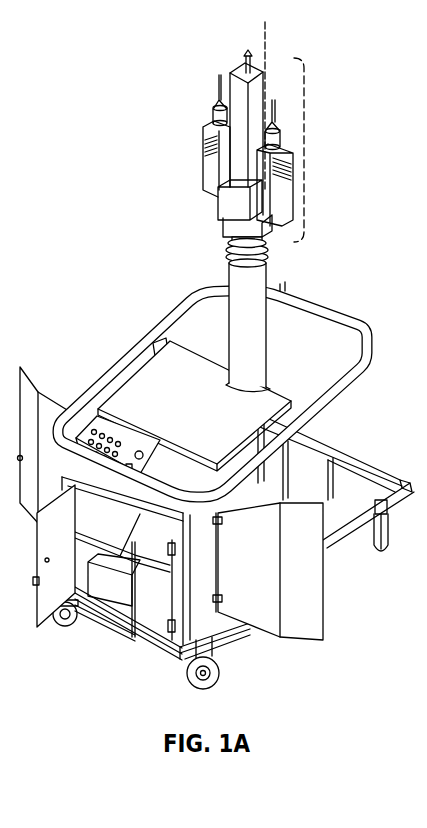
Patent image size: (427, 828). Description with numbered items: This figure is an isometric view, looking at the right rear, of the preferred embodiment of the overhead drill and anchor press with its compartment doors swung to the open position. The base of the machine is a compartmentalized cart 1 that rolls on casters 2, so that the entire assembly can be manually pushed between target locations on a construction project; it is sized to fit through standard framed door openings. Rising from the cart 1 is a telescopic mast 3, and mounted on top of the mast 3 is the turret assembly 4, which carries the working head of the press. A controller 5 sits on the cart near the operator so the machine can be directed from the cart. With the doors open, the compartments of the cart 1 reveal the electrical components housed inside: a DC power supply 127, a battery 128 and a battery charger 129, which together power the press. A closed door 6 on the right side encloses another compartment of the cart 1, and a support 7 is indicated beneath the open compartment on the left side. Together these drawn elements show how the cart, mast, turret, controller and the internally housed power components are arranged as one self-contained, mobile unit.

The compartmentalized cart 1 is at (342, 547).
The casters 2 is at (379, 540).
The telescopic mast 3 is at (267, 305).
The turret assembly 4 is at (307, 148).
The controller 5 is at (108, 426).
The cabinet door 6 is at (265, 565).
The cabinet support 7 is at (131, 633).
The DC power supply 127 is at (107, 613).
The battery 128 is at (117, 608).
The battery charger 129 is at (130, 610).